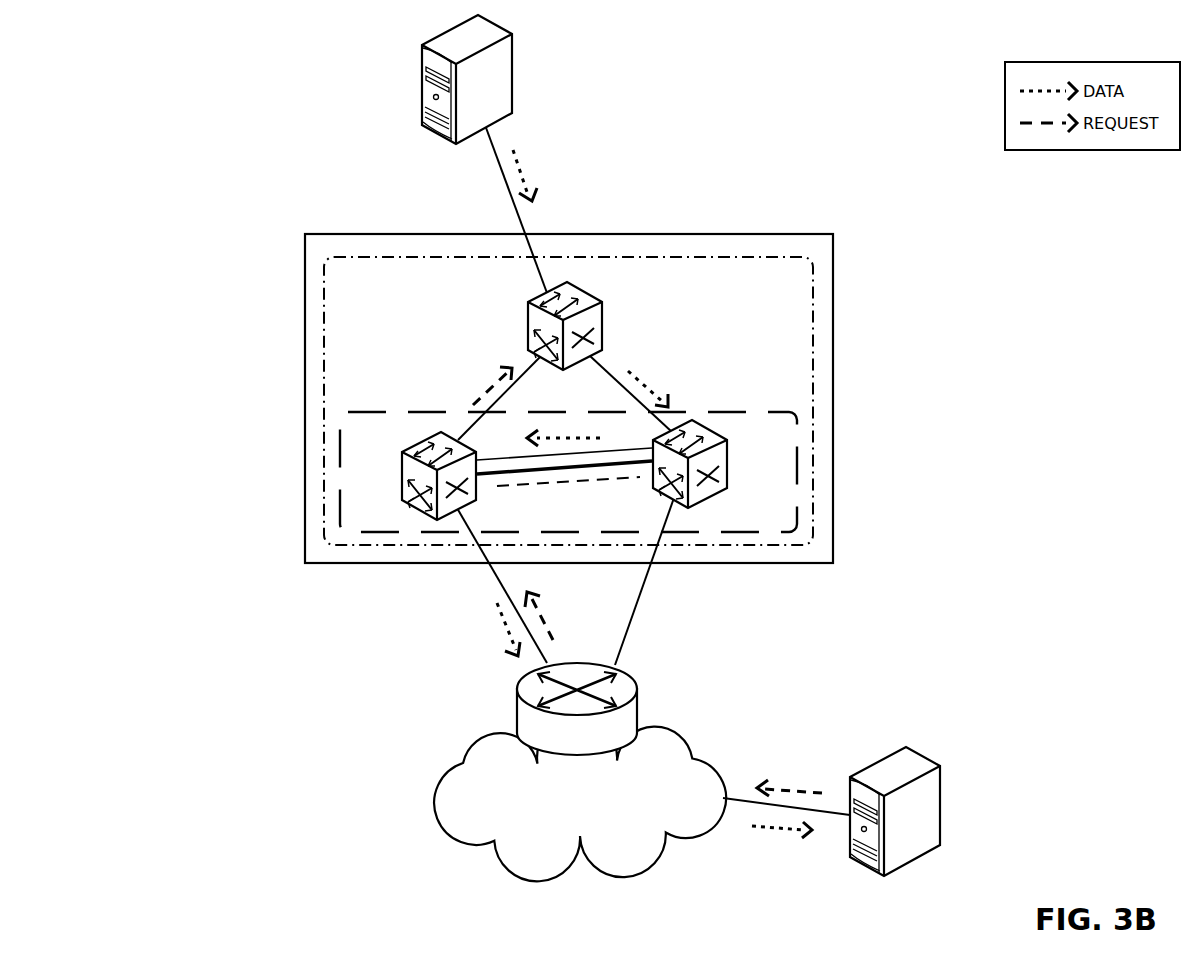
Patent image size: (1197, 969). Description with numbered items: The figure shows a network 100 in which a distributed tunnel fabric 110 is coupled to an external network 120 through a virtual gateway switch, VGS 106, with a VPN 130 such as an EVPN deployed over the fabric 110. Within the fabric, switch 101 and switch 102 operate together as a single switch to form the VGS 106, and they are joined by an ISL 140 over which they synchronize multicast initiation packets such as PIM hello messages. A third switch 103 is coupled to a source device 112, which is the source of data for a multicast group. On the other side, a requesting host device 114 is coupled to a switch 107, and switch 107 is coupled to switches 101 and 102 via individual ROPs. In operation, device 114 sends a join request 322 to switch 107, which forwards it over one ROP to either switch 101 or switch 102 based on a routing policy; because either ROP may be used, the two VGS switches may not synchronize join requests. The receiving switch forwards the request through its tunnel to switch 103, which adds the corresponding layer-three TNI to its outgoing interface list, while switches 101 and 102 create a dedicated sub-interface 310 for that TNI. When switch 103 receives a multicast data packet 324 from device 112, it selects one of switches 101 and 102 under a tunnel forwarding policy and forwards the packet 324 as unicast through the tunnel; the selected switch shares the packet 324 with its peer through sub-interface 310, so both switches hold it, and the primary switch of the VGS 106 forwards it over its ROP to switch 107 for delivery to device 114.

The network 100 is at (161, 104).
The distributed tunnel fabric 110 is at (752, 234).
The VPN 130 is at (815, 282).
The VGS 106 is at (778, 533).
The switch 101 is at (402, 477).
The switch 102 is at (733, 460).
The switch 103 is at (604, 316).
The ISL 140 is at (570, 488).
The sub-interface 310 is at (600, 467).
The switch 107 is at (637, 718).
The external network 120 is at (563, 821).
The device 112 is at (422, 76).
The device 114 is at (924, 853).
The join request 322 is at (787, 782).
The multicast data packet 324 is at (525, 165).